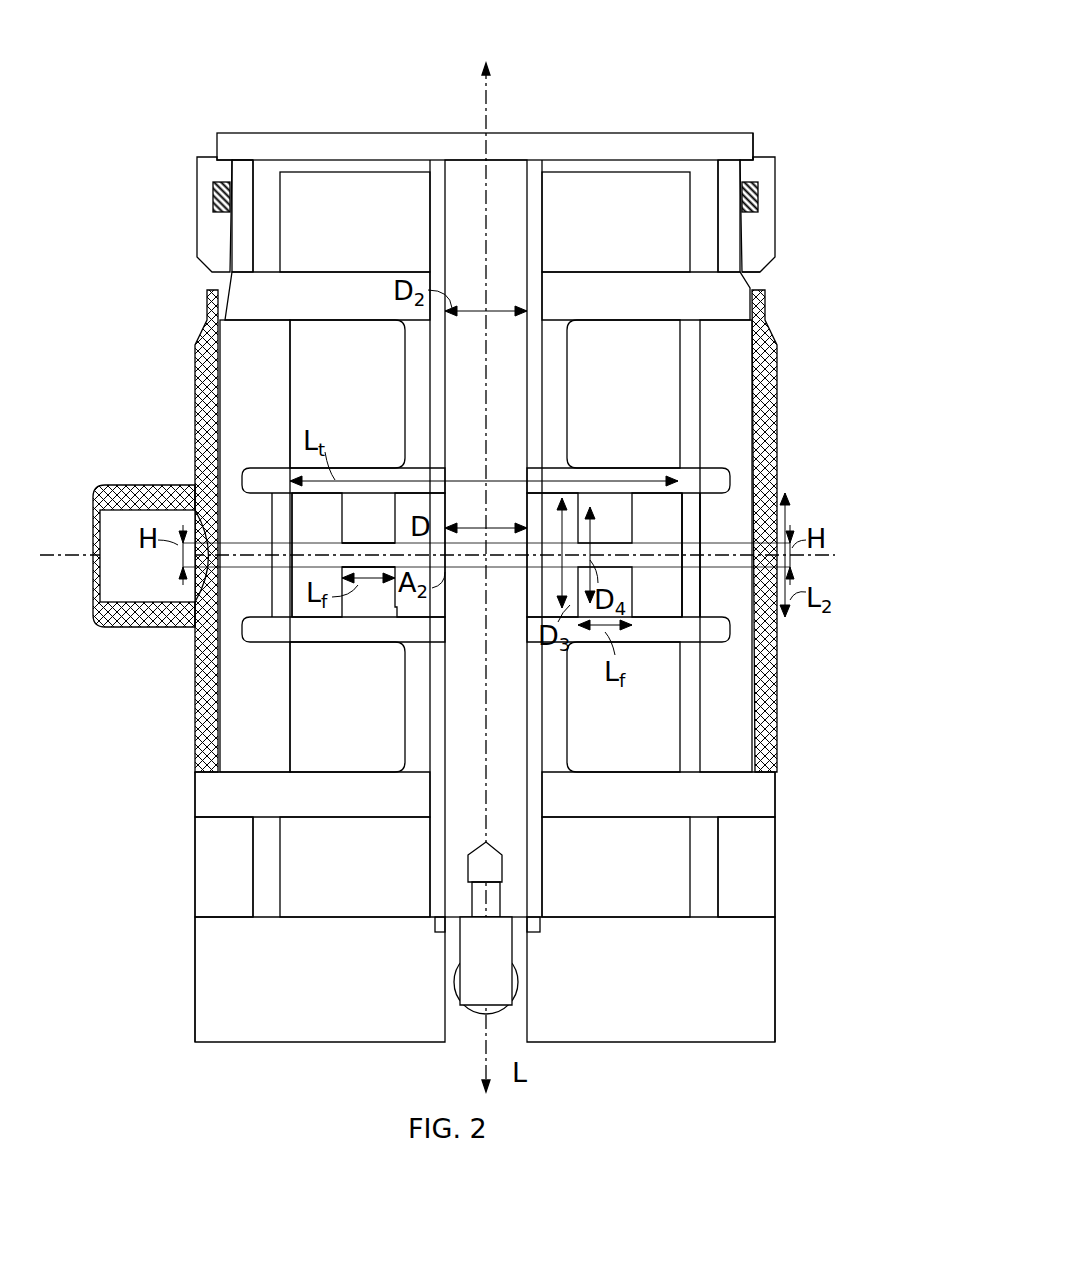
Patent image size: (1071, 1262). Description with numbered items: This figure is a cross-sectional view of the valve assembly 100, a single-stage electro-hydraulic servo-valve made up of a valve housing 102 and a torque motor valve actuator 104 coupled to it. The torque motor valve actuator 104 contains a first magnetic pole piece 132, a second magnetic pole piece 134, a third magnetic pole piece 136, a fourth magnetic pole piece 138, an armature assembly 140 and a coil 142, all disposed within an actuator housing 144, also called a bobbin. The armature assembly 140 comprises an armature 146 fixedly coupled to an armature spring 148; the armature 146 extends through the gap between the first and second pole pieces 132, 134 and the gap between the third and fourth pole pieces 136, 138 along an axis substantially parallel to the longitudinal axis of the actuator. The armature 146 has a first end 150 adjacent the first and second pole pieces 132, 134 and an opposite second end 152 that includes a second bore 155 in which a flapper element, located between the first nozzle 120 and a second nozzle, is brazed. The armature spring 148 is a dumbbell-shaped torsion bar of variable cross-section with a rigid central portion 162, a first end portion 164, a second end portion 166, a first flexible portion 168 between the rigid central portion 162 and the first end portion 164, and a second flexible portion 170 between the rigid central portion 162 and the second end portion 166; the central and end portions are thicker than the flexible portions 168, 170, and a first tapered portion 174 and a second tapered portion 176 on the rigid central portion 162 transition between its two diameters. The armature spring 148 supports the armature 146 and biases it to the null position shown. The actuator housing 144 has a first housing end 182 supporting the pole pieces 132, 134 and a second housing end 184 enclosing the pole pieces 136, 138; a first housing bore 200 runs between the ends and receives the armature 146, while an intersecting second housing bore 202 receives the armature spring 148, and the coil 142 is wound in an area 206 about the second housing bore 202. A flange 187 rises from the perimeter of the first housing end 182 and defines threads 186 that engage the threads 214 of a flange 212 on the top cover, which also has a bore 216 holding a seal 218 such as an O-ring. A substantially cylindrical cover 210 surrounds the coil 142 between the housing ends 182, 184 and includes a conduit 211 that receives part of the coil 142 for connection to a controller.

The valve assembly 100 is at (781, 102).
The valve housing 102 is at (797, 993).
The torque motor valve actuator 104 is at (809, 735).
The first nozzle 120 is at (705, 132).
The first magnetic pole piece 132 is at (232, 268).
The second magnetic pole piece 134 is at (742, 230).
The third magnetic pole piece 136 is at (300, 853).
The fourth magnetic pole piece 138 is at (690, 885).
The armature assembly 140 is at (442, 492).
The coil 142 is at (740, 428).
The actuator housing 144 is at (745, 280).
The armature 146 is at (538, 168).
The armature spring 148 is at (700, 528).
The first end 150 is at (510, 165).
The second end 152 is at (525, 928).
The second bore 155 is at (460, 905).
The rigid central portion 162 is at (395, 618).
The first end portion 164 is at (292, 622).
The second end portion 166 is at (680, 630).
The first flexible portion 168 is at (375, 545).
The second flexible portion 170 is at (598, 530).
The first tapered portion 174 is at (420, 618).
The second tapered portion 176 is at (560, 495).
The first housing end 182 is at (212, 318).
The second housing end 184 is at (200, 772).
The plurality of threads 186 is at (215, 236).
The flange 187 is at (262, 170).
The first housing bore 200 is at (435, 785).
The second housing bore 202 is at (700, 598).
The area 206 is at (392, 392).
The cover 210 is at (778, 370).
The conduit 211 is at (138, 630).
The flange 212 is at (790, 166).
The plurality of threads 214 is at (760, 250).
The bore 216 is at (760, 165).
The seal 218 is at (760, 197).